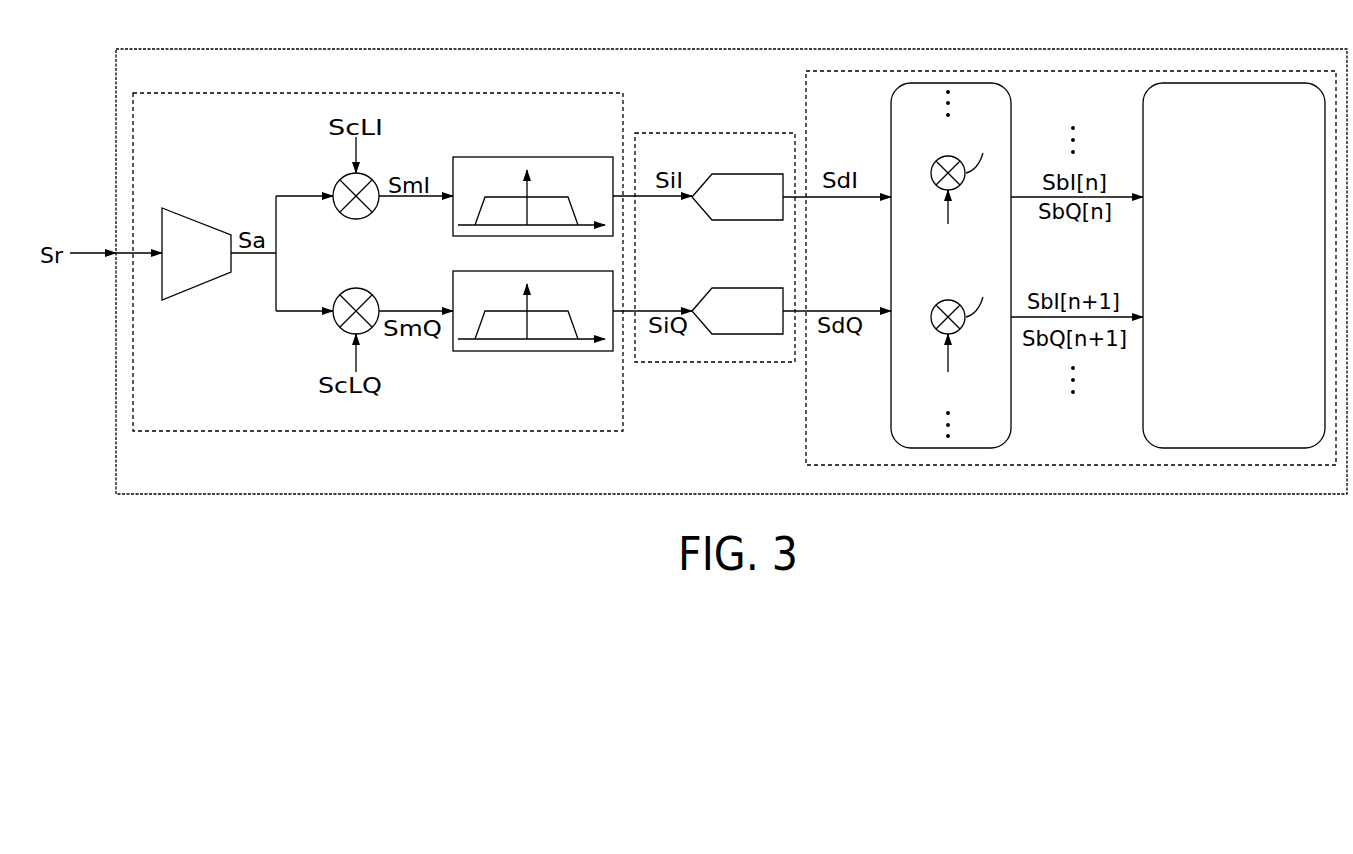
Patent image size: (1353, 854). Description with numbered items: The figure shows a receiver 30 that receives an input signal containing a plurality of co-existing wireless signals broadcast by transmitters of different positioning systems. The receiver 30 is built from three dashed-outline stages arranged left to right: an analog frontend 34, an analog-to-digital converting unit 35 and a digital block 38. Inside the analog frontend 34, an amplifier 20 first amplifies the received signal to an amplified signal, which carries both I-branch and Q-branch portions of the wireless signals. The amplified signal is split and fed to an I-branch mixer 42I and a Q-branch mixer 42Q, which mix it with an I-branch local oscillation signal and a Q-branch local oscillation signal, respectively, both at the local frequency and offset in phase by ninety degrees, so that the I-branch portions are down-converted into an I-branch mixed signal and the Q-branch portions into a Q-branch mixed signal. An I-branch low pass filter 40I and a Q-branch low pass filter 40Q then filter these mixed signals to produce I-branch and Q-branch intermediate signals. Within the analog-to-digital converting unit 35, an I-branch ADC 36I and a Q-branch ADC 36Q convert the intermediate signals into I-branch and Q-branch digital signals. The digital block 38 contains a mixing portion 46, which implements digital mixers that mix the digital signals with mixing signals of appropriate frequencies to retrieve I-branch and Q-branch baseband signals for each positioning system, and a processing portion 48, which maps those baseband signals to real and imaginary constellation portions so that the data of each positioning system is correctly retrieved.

The receiver 30 is at (714, 47).
The amplifier 20 is at (185, 287).
The analog frontend 34 is at (367, 93).
The analog-to-digital converting unit 35 is at (715, 133).
The I-branch ADC 36I is at (766, 172).
The Q-branch ADC 36Q is at (768, 287).
The digital block 38 is at (806, 91).
The I-branch low pass filter 40I is at (510, 156).
The Q-branch low pass filter 40Q is at (510, 352).
The I-branch mixer 42I is at (342, 176).
The Q-branch mixer 42Q is at (343, 332).
The mixing portion 46 is at (1011, 431).
The processing portion 48 is at (1143, 431).